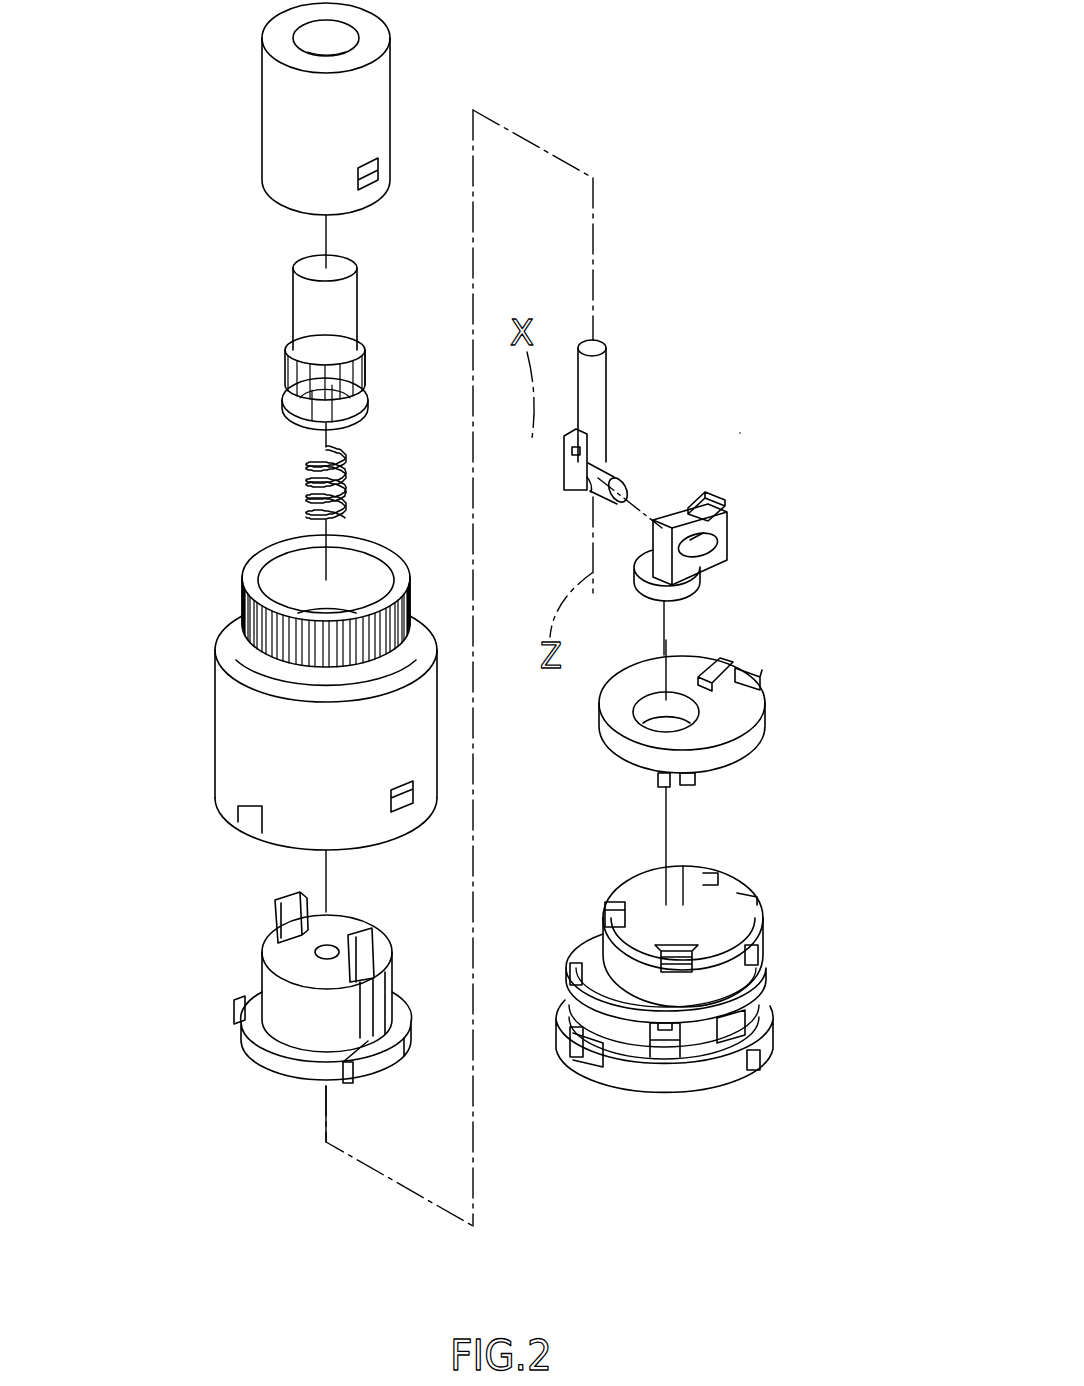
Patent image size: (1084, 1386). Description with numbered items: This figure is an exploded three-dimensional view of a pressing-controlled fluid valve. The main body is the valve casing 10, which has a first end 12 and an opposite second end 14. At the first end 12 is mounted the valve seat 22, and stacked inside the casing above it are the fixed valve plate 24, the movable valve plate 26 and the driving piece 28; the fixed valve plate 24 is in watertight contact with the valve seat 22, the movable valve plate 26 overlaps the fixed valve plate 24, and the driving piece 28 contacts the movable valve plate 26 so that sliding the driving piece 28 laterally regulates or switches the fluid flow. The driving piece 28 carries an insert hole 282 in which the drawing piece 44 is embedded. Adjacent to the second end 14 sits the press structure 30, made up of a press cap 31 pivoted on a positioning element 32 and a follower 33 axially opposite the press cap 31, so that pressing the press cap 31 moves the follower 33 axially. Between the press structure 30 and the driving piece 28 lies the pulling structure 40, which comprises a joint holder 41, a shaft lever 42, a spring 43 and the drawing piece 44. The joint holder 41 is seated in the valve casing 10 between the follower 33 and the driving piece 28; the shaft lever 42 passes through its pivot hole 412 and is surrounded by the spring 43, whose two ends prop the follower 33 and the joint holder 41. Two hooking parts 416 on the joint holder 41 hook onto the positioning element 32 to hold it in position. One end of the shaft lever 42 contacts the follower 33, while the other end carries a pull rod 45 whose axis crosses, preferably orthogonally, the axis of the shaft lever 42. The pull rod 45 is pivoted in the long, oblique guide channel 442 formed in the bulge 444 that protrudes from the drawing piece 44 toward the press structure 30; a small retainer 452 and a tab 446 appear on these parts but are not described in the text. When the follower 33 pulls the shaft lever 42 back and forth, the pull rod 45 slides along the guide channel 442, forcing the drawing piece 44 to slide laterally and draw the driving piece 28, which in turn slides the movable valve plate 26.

The valve casing 10 is at (283, 733).
The first end 12 is at (222, 813).
The second end 14 is at (253, 575).
The valve seat 22 is at (703, 1080).
The fixed valve plate 24 is at (752, 1005).
The movable valve plate 26 is at (750, 955).
The driving piece 28 is at (723, 730).
The insert hole 282 is at (687, 717).
The press structure 30 is at (242, 243).
The press cap 31 is at (293, 305).
The positioning element 32 is at (262, 108).
The follower 33 is at (283, 403).
The pulling structure 40 is at (740, 433).
The joint holder 41 is at (297, 995).
The pivot hole 412 is at (267, 957).
The hooking parts 416 is at (277, 908).
The shaft lever 42 is at (598, 367).
The spring 43 is at (307, 482).
The drawing piece 44 is at (736, 535).
The guide channel 442 is at (707, 550).
The bulge 444 is at (746, 512).
The tab of block 446 is at (714, 502).
The pull rod 45 is at (610, 477).
The pin holder 452 is at (577, 482).